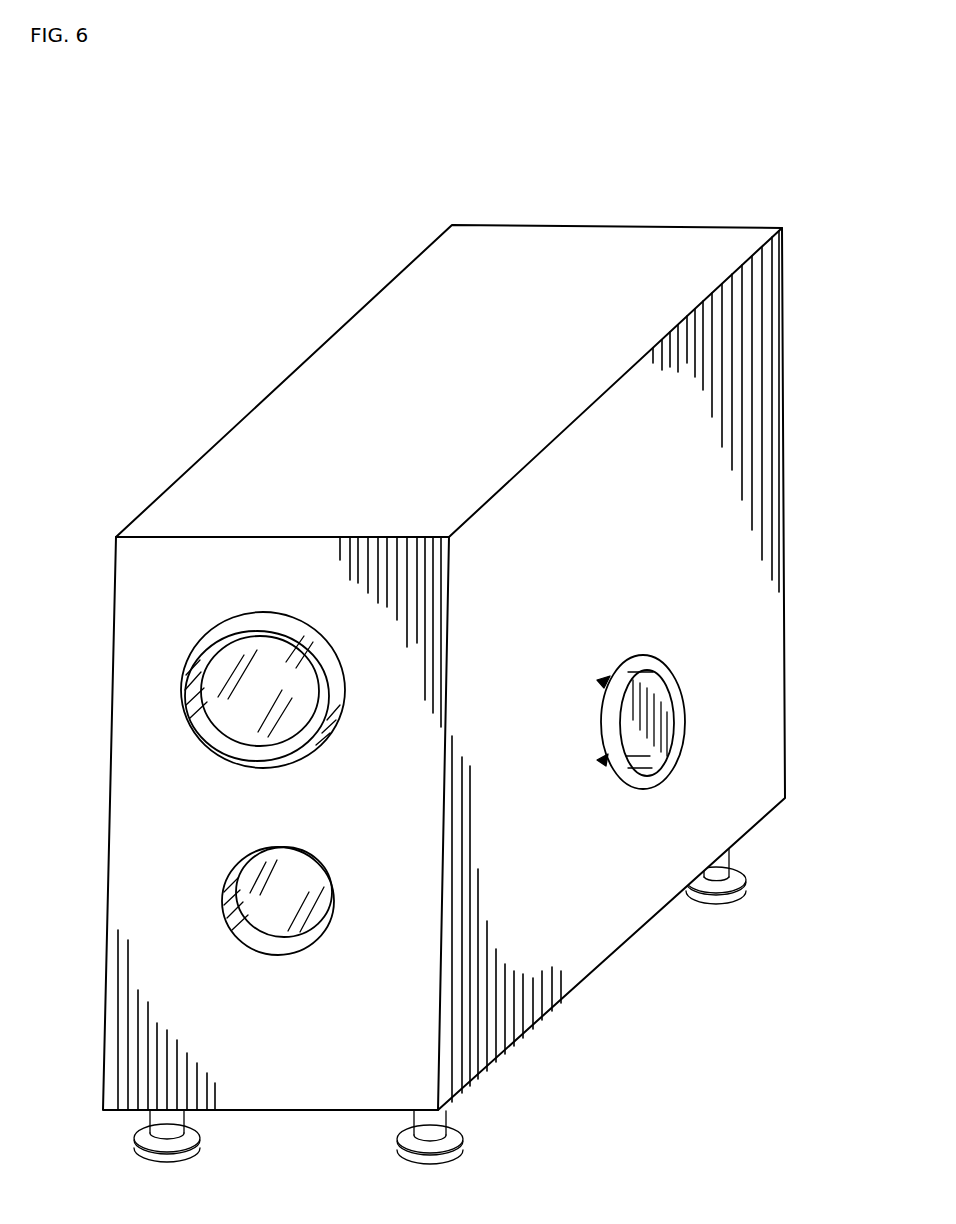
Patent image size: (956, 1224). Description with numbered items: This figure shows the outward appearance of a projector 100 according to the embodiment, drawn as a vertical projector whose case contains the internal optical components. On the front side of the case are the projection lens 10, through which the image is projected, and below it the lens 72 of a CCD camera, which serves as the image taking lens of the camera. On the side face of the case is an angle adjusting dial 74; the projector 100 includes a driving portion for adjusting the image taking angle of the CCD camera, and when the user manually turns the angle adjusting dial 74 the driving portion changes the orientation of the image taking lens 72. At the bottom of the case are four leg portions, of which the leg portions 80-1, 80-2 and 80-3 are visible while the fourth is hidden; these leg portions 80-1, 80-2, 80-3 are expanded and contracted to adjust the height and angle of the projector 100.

The projector 100 is at (804, 188).
The projection lens 10 is at (268, 663).
The lens of CCD camera 72 is at (310, 873).
The angle adjusting dial 74 is at (633, 722).
The leg portion 80-1 is at (184, 1120).
The leg portion 80-2 is at (447, 1118).
The leg portion 80-3 is at (730, 868).